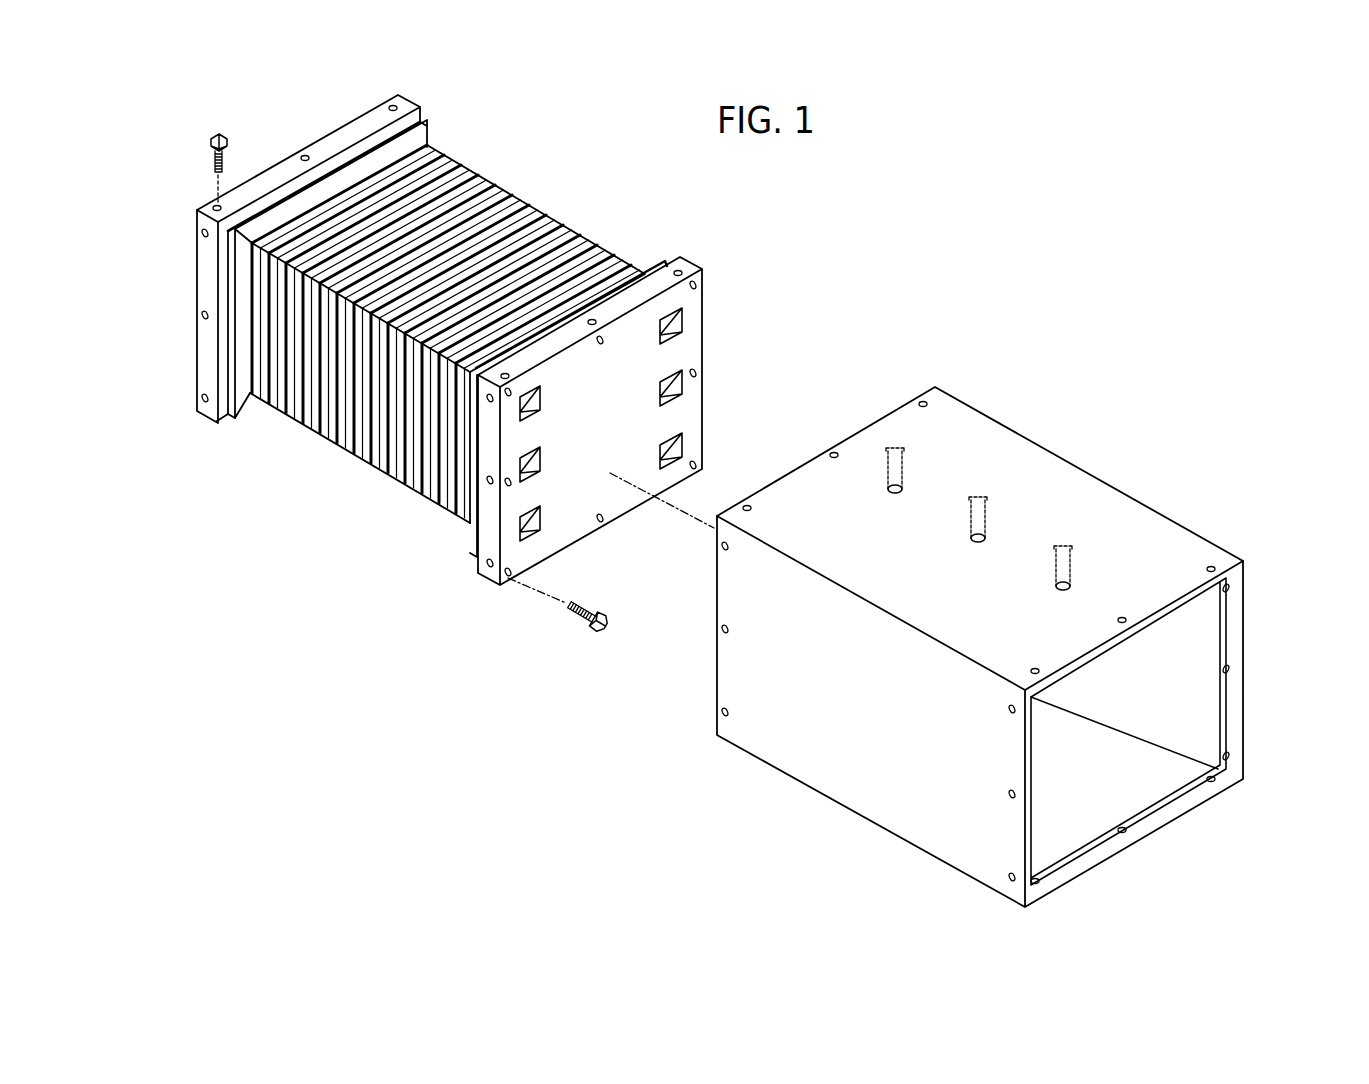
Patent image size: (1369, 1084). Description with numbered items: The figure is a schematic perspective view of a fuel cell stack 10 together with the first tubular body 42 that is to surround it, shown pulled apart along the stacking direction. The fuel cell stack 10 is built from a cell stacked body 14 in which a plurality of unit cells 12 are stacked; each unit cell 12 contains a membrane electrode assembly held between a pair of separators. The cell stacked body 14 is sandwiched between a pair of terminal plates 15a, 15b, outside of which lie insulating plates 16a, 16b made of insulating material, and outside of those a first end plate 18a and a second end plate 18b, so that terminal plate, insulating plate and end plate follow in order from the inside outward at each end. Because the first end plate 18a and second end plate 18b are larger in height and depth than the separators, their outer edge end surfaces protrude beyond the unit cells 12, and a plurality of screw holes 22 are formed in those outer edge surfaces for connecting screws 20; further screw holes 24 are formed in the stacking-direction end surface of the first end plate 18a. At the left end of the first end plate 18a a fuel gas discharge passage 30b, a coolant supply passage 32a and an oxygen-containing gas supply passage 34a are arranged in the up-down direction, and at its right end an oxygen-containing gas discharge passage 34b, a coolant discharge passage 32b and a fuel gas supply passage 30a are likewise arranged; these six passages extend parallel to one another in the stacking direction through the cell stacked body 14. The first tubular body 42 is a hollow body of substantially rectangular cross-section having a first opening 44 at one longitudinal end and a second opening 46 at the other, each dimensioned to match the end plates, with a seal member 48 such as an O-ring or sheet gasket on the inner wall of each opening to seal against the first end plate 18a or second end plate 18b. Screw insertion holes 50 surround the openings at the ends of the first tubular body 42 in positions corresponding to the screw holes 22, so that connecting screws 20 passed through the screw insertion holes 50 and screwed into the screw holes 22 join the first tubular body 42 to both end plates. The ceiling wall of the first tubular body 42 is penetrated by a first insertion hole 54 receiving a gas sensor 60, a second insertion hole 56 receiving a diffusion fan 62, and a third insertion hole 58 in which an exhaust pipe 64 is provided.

The fuel cell stack 10 is at (550, 188).
The unit cell 12 is at (355, 459).
The cell stacked body 14 is at (472, 179).
The terminal plate 15a is at (468, 535).
The terminal plate 15b is at (420, 140).
The insulating plate 16a is at (610, 290).
The insulating plate 16b is at (350, 160).
The first end plate 18a is at (623, 497).
The second end plate 18b is at (197, 270).
The connecting screw 20 is at (210, 139).
The screw hole 22 is at (212, 205).
The screw hole 24 is at (698, 282).
The fuel gas supply passage 30a is at (683, 322).
The fuel gas discharge passage 30b is at (542, 524).
The coolant supply passage 32a is at (541, 462).
The coolant discharge passage 32b is at (683, 382).
The oxygen-containing gas supply passage 34a is at (541, 397).
The oxygen-containing gas discharge passage 34b is at (663, 445).
The first tubular body 42 is at (831, 784).
The first opening 44 is at (1226, 720).
The second opening 46 is at (880, 434).
The seal member 48 is at (798, 480).
The screw insertion hole 50 is at (922, 400).
The first insertion hole 54 is at (893, 497).
The second insertion hole 56 is at (1062, 595).
The third insertion hole 58 is at (977, 546).
The gas sensor 60 is at (906, 457).
The fan 62 is at (1069, 545).
The exhaust pipe 64 is at (982, 494).